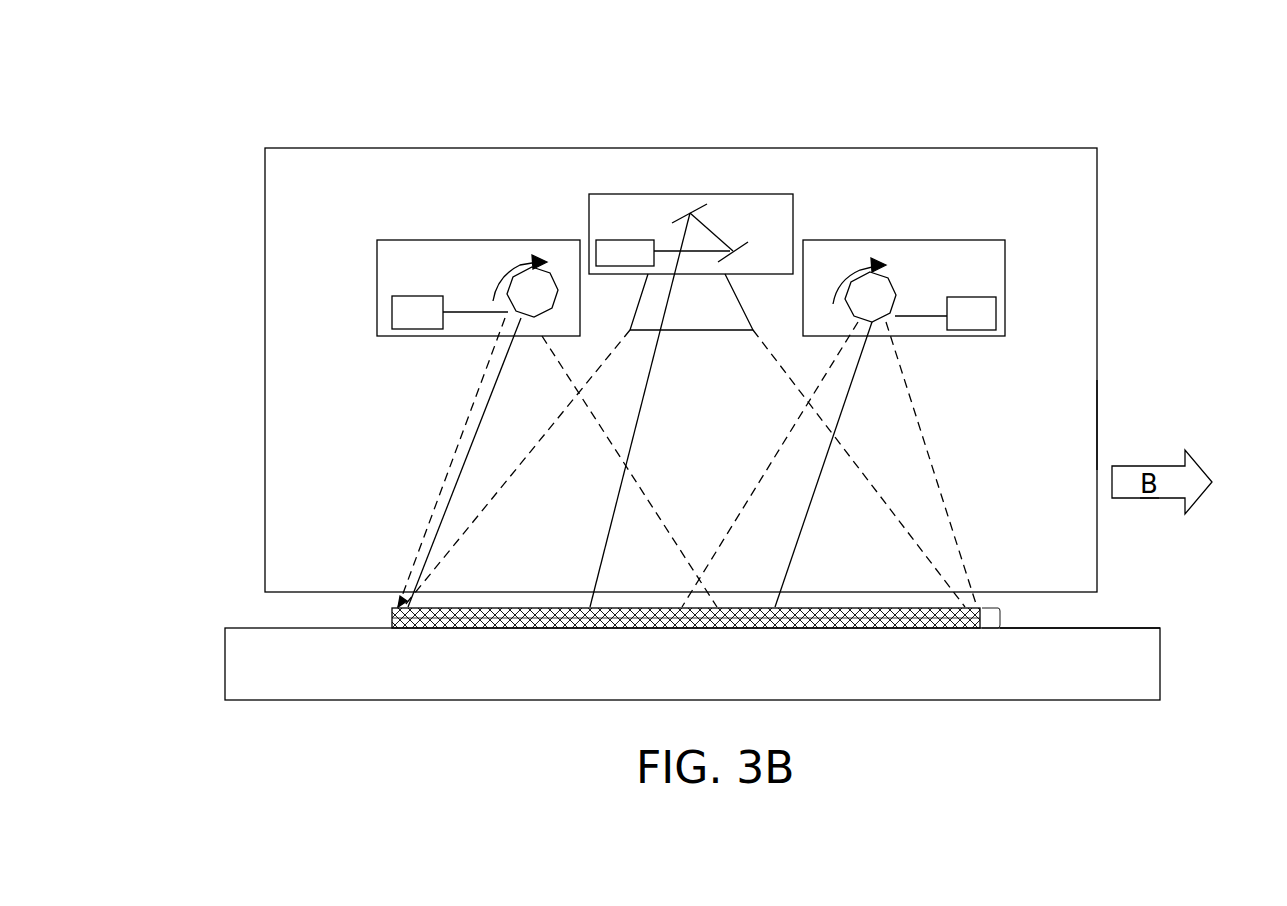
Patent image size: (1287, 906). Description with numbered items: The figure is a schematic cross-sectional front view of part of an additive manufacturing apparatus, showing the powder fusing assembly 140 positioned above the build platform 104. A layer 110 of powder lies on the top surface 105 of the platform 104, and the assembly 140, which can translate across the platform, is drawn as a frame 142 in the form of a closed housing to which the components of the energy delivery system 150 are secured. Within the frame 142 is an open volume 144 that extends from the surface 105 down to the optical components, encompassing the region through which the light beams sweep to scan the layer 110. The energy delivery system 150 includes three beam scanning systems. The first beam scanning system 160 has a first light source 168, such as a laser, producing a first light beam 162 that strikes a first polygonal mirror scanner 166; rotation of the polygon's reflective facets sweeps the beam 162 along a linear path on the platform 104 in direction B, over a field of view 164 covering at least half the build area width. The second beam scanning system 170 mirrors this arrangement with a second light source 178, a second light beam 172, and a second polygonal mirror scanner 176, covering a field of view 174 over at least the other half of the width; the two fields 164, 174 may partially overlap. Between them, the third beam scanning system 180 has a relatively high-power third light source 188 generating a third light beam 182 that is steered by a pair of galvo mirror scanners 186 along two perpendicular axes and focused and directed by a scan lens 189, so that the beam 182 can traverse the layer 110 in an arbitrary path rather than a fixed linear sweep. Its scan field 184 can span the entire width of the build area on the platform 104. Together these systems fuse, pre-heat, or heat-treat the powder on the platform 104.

The build platform 104 is at (692, 664).
The top surface 105 is at (1133, 628).
The layer of powder 110 is at (465, 607).
The powder fusing assembly 140 is at (1122, 277).
The frame 142 is at (1097, 425).
The open volume 144 is at (717, 511).
The energy delivery system 150 is at (340, 285).
The first beam scanning system 160 is at (447, 205).
The first light beam 162 is at (456, 479).
The field of view of the first beam scanning system 164 is at (428, 511).
The first polygonal mirror scanner 166 is at (552, 273).
The first light source 168 is at (412, 320).
The second beam scanning system 170 is at (903, 205).
The second light beam 172 is at (848, 408).
The field of view of the second beam scanning system 174 is at (940, 483).
The second polygonal mirror scanner 176 is at (888, 285).
The second light source 178 is at (985, 308).
The third beam scanning system 180 is at (692, 165).
The third light beam 182 is at (650, 383).
The scan field of the third beam scanning system 184 is at (930, 540).
The galvo mirror scanners 186 is at (688, 216).
The third light source 188 is at (622, 242).
The scan lens 189 is at (724, 320).